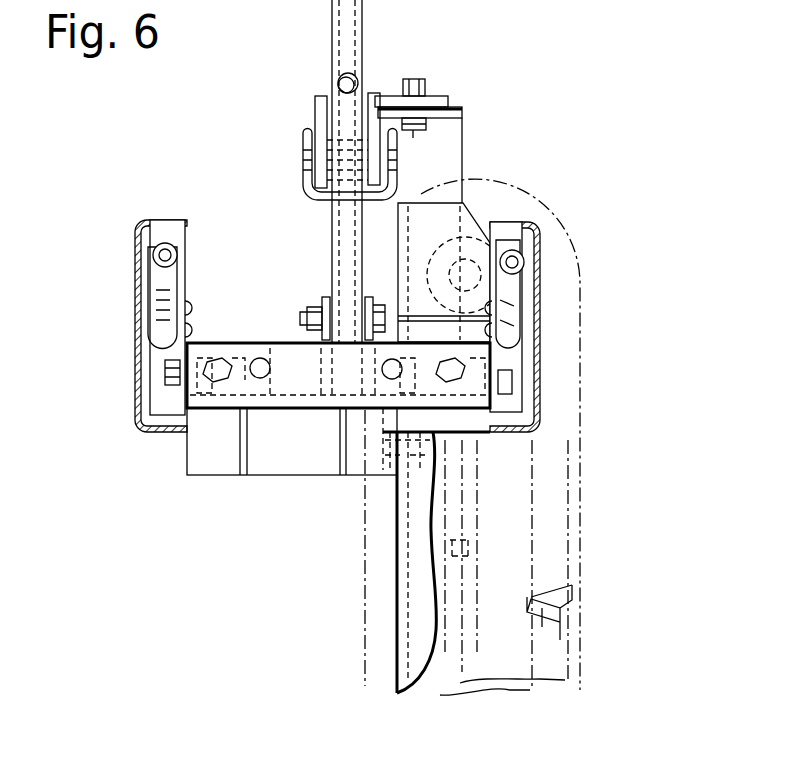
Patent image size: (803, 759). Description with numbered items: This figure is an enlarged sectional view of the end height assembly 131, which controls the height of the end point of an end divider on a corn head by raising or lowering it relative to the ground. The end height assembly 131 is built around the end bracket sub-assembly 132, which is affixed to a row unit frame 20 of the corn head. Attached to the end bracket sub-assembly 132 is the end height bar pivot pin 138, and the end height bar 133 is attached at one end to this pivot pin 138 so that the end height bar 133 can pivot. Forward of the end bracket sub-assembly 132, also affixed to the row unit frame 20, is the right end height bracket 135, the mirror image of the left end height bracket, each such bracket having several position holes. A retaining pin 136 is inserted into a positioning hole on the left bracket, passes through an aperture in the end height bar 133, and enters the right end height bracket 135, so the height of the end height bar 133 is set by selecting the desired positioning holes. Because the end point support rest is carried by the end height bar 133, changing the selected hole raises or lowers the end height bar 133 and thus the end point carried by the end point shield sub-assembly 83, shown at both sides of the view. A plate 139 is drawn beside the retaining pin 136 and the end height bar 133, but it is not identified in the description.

The pipe / post 20 is at (425, 510).
The bracket 83 is at (165, 290).
The lower bar 131 is at (330, 235).
The plate 132 is at (237, 395).
The upper bar 133 is at (362, 38).
The angle bracket 135 is at (395, 160).
The U-bolt 136 is at (303, 150).
The bolt 138 is at (303, 318).
The plate 139 is at (315, 110).